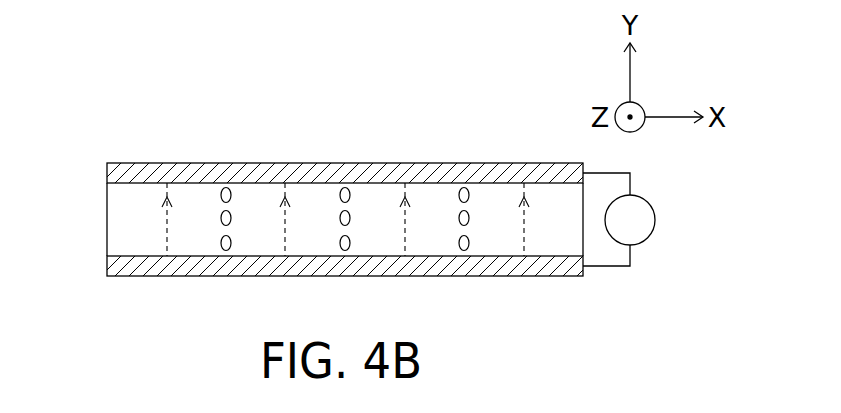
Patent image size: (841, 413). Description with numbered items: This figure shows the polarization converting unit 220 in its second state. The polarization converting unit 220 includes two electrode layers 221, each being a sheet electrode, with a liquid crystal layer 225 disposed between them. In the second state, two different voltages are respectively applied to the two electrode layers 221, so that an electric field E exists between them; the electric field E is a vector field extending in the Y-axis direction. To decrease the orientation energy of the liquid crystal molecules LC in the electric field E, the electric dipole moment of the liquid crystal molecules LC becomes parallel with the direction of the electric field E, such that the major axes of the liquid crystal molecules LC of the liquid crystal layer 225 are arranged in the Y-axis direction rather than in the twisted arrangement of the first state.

The polarization converting unit 220 is at (367, 226).
The electrode layers 221 is at (420, 170).
The liquid crystal layer 225 is at (304, 226).
The electric field E is at (168, 197).
The liquid crystal molecules LC is at (226, 249).